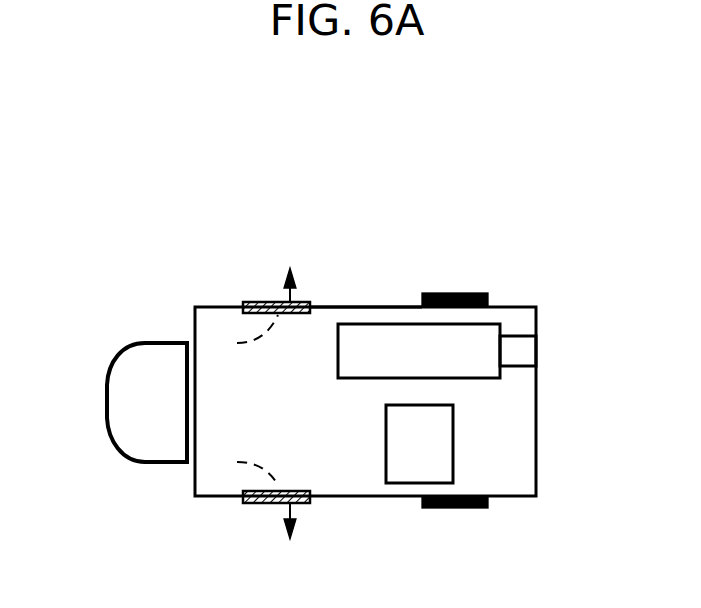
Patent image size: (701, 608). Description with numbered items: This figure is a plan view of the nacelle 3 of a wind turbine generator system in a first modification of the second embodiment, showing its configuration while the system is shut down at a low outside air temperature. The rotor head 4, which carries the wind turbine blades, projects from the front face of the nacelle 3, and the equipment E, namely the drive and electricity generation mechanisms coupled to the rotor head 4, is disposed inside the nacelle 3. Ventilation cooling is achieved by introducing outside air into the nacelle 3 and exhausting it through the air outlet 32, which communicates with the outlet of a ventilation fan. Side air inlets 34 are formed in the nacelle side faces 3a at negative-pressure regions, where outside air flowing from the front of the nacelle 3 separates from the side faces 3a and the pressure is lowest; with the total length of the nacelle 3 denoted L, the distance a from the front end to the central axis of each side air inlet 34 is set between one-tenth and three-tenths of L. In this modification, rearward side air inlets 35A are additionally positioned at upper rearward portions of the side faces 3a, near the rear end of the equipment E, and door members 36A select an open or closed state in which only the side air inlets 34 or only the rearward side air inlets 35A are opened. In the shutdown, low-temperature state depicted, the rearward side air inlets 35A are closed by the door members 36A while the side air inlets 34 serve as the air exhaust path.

The nacelle 3 is at (510, 497).
The nacelle side face 3a is at (368, 305).
The rotor head 4 is at (106, 397).
The air outlet 32 is at (537, 350).
The side air inlet 34 is at (298, 299).
The rearward side air inlet 35A is at (451, 409).
The door member 36A is at (453, 293).
The equipment E is at (338, 360).
The total length of the nacelle L is at (535, 298).
The length from the front end of the nacelle to the central axis of the side air inl a is at (277, 275).